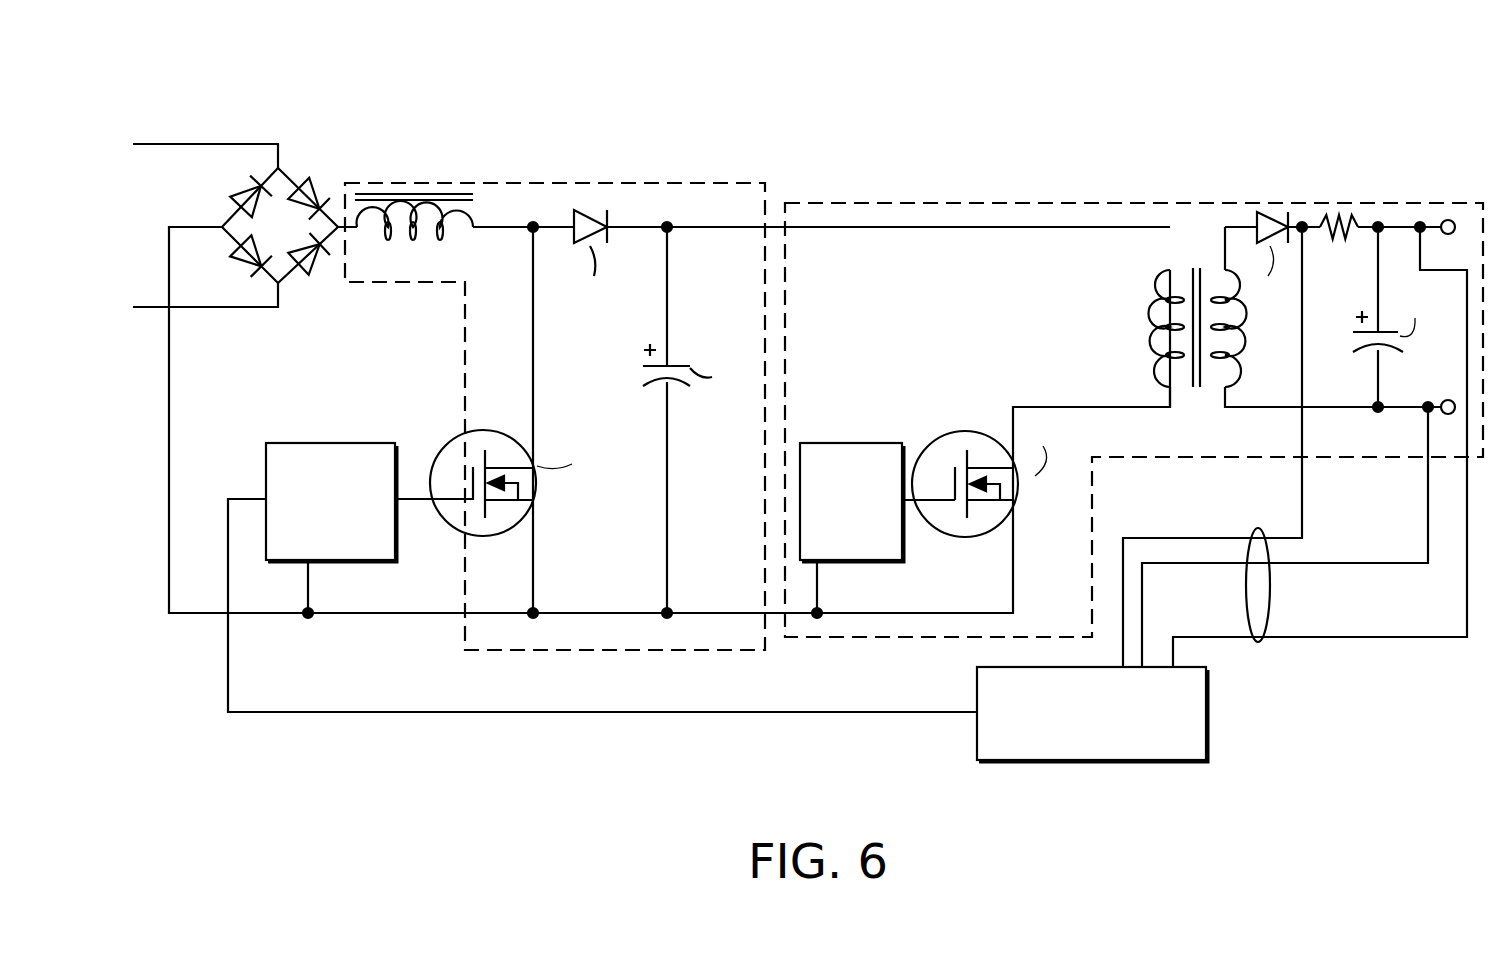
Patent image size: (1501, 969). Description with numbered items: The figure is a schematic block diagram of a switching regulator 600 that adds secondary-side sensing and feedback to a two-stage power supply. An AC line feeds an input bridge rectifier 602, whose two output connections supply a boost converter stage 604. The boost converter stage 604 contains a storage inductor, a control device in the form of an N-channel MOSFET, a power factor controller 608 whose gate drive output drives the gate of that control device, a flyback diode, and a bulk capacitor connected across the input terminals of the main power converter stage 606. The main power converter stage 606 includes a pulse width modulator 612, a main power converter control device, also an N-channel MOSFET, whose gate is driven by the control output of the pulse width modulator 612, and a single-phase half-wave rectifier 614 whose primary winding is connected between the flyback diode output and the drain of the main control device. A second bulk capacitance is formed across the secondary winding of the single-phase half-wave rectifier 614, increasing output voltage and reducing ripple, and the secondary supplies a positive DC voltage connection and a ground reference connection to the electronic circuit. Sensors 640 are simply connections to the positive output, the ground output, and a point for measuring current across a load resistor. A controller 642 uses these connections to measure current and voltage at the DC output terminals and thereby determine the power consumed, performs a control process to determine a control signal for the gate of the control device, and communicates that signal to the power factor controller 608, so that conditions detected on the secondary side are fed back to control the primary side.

The switching regulator 600 is at (808, 454).
The input bridge rectifier 602 is at (312, 182).
The boost converter stage 604 is at (585, 183).
The main power converter stage 606 is at (887, 203).
The power factor controller 608 is at (311, 528).
The pulse width modulator 612 is at (833, 527).
The single-phase half-wave rectifier 614 is at (1197, 392).
The sensors 640 is at (1262, 640).
The controller 642 is at (1071, 745).